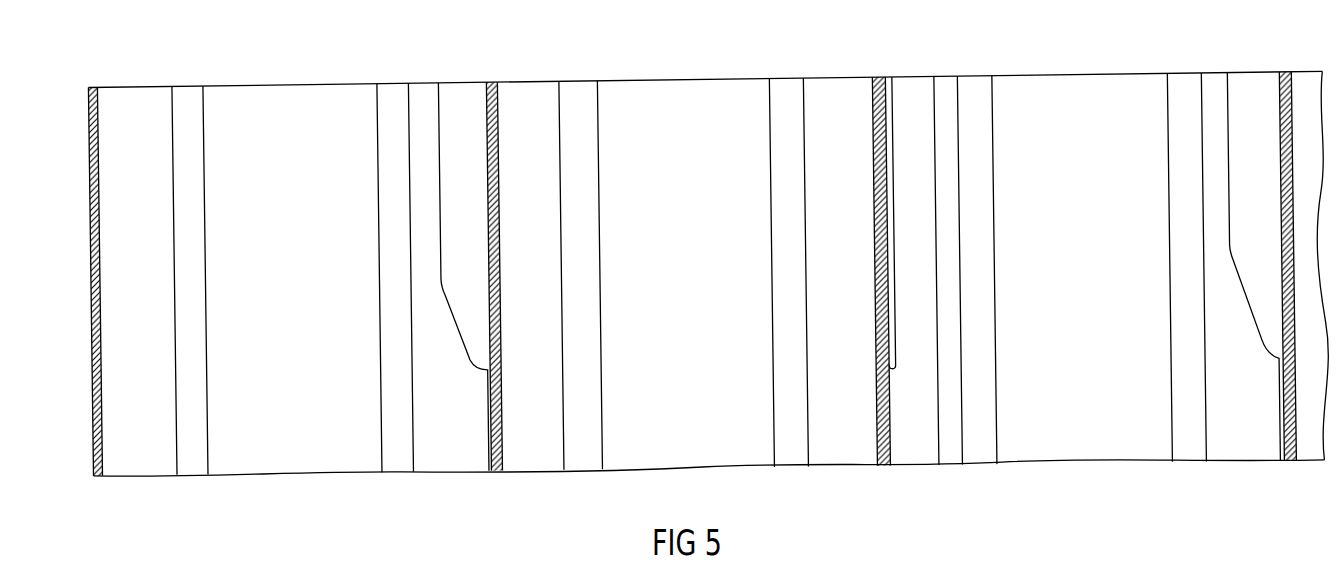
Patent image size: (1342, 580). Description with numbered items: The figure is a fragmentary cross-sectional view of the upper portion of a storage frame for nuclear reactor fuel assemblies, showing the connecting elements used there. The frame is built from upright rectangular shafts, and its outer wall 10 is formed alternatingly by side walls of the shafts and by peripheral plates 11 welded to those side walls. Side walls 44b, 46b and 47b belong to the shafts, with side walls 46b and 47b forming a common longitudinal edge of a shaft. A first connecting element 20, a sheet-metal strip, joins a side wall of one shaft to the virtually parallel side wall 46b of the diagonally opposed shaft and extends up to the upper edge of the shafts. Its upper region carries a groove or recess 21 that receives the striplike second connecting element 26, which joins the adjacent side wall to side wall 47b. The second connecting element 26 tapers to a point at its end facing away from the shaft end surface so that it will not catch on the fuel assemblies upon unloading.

The outer wall 10 is at (84, 316).
The peripheral plate 11 is at (93, 230).
The first connecting element 20 is at (920, 212).
The groove or recess 21 is at (888, 115).
The second connecting element 26 is at (460, 229).
The side wall 44b is at (877, 226).
The side wall 46b is at (533, 218).
The side wall 47b is at (669, 167).